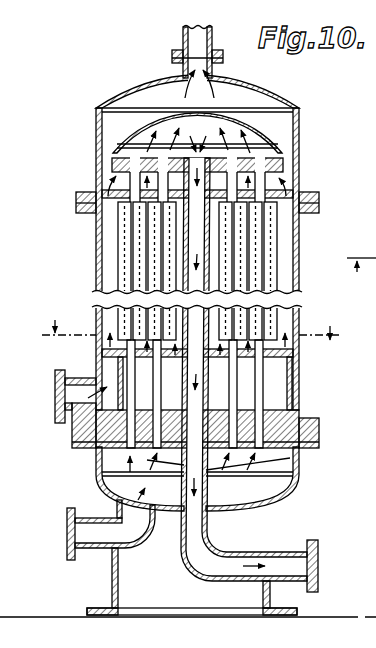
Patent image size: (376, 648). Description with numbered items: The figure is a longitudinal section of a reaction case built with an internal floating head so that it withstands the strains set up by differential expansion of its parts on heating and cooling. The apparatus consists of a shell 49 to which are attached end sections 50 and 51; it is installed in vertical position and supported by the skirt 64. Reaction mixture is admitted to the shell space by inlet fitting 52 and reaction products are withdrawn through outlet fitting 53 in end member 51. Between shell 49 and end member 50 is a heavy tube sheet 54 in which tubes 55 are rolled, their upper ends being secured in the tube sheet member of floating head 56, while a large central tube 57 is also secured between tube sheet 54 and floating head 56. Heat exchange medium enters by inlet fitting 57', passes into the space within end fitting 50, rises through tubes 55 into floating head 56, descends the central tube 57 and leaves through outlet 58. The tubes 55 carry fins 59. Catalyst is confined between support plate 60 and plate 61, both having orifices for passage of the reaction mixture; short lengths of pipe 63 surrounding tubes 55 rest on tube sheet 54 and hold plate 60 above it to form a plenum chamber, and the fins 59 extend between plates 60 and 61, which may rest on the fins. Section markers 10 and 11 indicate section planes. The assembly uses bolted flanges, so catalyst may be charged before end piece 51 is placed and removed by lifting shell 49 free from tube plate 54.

The shell 49 is at (299, 253).
The end section 50 is at (298, 473).
The end section 51 is at (284, 101).
The inlet fitting 52 is at (58, 408).
The outlet fitting 53 is at (183, 32).
The tube sheet 54 is at (319, 435).
The tubes 55 is at (260, 425).
The floating head 56 is at (283, 148).
The central tube 57 is at (244, 369).
The inlet fitting 57' is at (111, 538).
The outlet 58 is at (318, 582).
The fins 59 is at (270, 318).
The support plate 60 is at (290, 372).
The plate 61 is at (300, 196).
The short lengths of pipe 63 is at (119, 378).
The skirt 64 is at (112, 590).
The section line 10 is at (360, 255).
The section line 11 is at (192, 338).